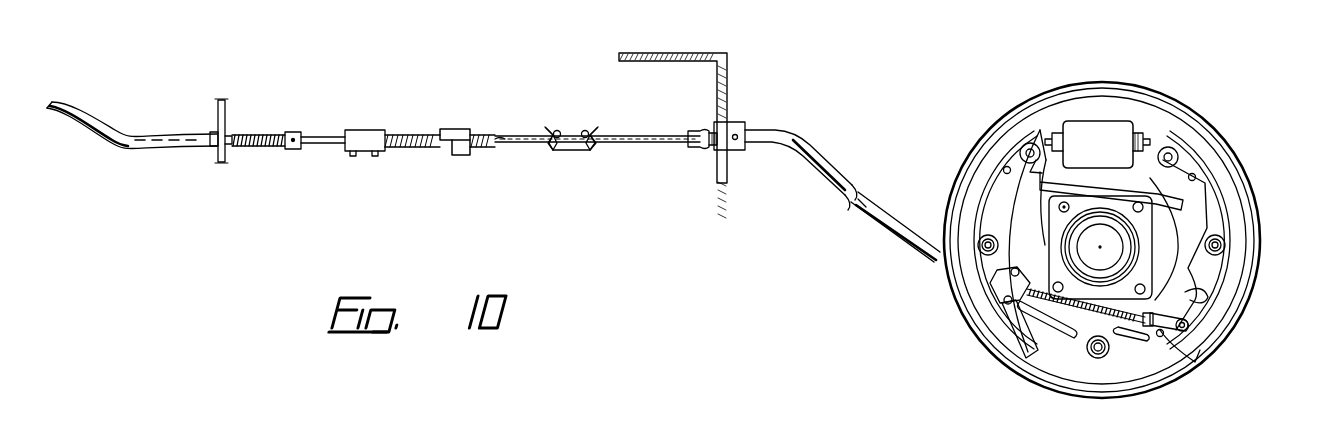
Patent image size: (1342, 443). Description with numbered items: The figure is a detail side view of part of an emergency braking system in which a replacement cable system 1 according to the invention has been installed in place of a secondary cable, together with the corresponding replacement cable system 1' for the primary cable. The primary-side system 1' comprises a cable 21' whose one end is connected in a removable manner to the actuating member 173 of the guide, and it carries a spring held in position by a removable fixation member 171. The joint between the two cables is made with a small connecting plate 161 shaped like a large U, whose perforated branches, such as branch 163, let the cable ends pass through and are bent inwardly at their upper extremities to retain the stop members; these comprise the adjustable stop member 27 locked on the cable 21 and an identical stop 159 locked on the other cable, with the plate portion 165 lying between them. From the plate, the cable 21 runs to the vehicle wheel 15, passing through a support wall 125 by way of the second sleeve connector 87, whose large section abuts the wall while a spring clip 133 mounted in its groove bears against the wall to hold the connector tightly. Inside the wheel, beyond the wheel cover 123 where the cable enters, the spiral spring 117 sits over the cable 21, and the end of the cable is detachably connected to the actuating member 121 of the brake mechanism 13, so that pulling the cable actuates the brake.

The replacement cable system 1' is at (132, 119).
The cable 21' is at (258, 116).
The removable fixation member 171 is at (301, 131).
The actuating member 173 is at (402, 130).
The stop 159 is at (554, 127).
The adjustable stop member 27 is at (586, 127).
The clip arm 165 is at (548, 148).
The connecting plate 161 is at (575, 152).
The branch 163 is at (592, 150).
The cable 21 is at (824, 280).
The spring clip 133 is at (713, 158).
The support wall 125 is at (729, 78).
The second sleeve connector 87 is at (738, 153).
The replacement cable system 1 is at (842, 175).
The vehicle wheel 15 is at (1200, 114).
The brake mechanism 13 is at (1212, 219).
The wheel cover 123 is at (1025, 203).
The spiral spring 117 is at (1040, 302).
The actuating member 121 is at (1162, 335).